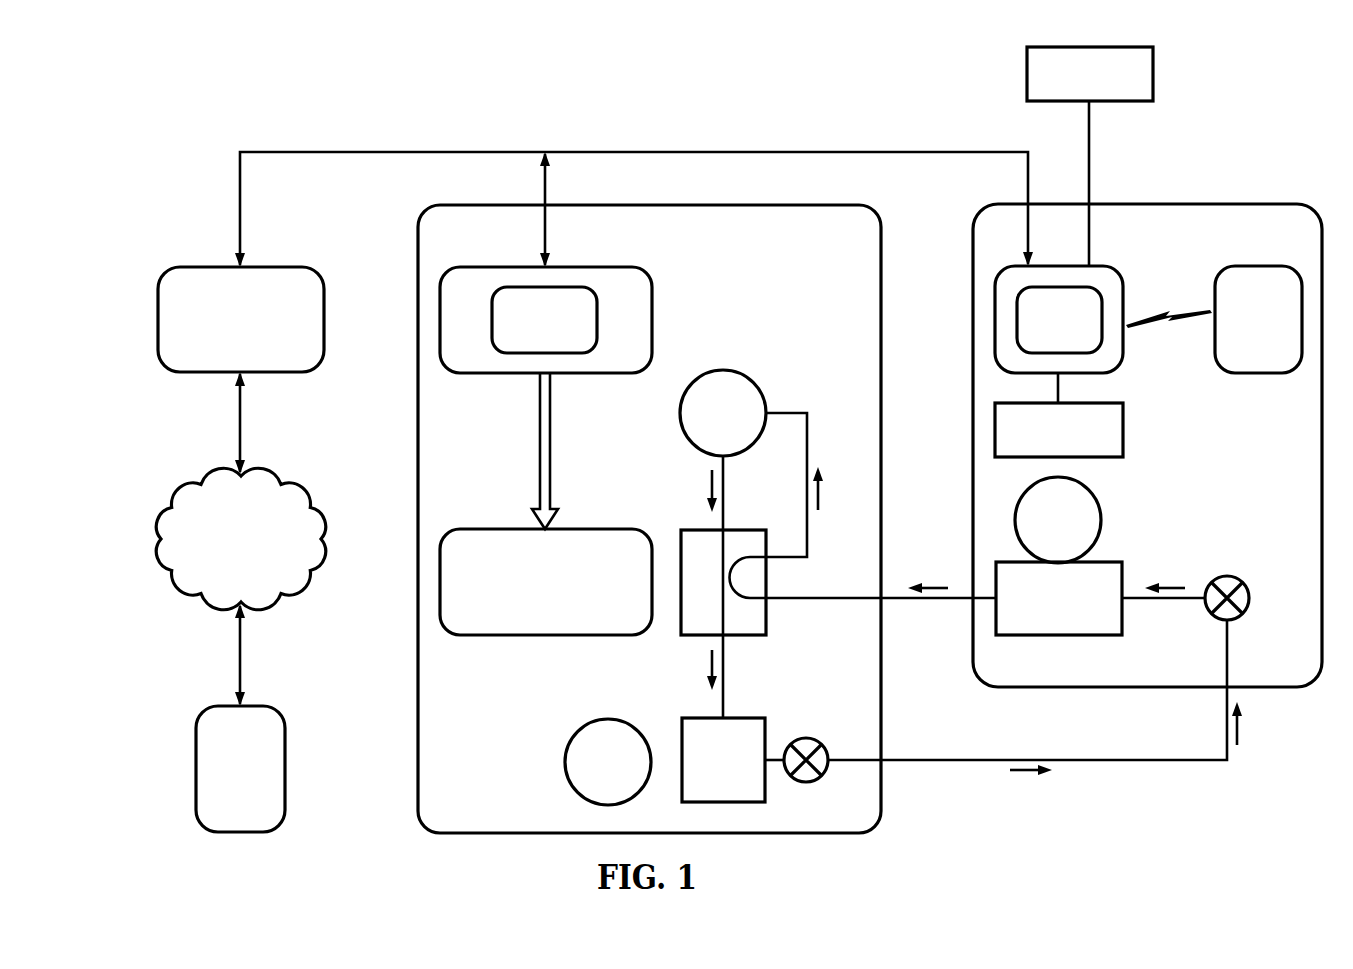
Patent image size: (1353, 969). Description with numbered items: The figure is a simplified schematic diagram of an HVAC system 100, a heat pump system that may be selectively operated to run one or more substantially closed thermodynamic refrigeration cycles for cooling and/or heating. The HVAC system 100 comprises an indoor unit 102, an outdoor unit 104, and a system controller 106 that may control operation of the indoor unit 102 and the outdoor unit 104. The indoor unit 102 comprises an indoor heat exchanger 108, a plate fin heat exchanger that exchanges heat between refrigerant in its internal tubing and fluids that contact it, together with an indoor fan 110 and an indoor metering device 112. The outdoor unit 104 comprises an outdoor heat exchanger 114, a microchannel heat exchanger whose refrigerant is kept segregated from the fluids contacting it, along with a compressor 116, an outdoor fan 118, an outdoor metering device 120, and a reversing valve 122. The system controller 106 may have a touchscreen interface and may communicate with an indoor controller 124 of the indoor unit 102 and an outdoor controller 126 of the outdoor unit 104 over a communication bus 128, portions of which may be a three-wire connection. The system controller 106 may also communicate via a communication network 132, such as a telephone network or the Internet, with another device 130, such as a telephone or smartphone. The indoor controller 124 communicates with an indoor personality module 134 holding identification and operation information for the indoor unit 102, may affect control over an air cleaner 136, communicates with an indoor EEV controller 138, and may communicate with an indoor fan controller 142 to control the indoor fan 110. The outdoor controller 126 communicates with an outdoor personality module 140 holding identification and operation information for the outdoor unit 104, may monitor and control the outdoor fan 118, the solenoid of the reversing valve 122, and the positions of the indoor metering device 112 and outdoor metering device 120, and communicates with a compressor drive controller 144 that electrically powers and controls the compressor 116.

The HVAC system 100 is at (392, 97).
The indoor unit 102 is at (1232, 198).
The outdoor unit 104 is at (410, 255).
The system controller 106 is at (218, 336).
The indoor heat exchanger 108 is at (1036, 614).
The indoor fan 110 is at (1035, 536).
The indoor metering device 112 is at (1243, 612).
The outdoor heat exchanger 114 is at (700, 776).
The compressor 116 is at (700, 429).
The outdoor fan 118 is at (585, 778).
The outdoor metering device 120 is at (822, 775).
The reversing valve 122 is at (766, 610).
The indoor controller 124 is at (1125, 297).
The outdoor controller 126 is at (492, 267).
The communication bus 128 is at (634, 151).
The other device 130 is at (217, 785).
The communication network 132 is at (218, 555).
The indoor personality module 134 is at (1036, 336).
The air cleaner 136 is at (1067, 90).
The indoor EEV controller 138 is at (1235, 336).
The outdoor personality module 140 is at (522, 336).
The indoor fan controller 142 is at (1036, 446).
The compressor drive controller 144 is at (523, 598).